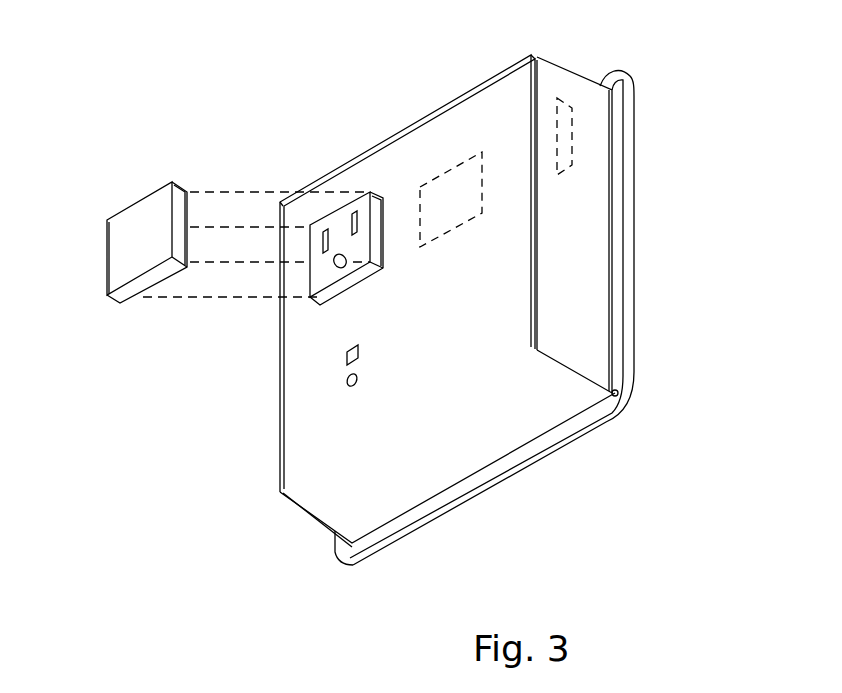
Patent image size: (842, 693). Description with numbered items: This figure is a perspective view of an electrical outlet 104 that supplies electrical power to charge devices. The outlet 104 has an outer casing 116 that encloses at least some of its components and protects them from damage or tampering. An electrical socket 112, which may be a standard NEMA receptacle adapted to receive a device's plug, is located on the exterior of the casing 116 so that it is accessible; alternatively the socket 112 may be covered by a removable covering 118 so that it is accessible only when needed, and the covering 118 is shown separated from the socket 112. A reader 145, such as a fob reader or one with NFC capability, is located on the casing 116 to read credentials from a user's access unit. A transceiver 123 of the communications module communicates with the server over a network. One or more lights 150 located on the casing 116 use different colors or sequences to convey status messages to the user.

The electrical outlet 104 is at (530, 494).
The outer casing 116 is at (290, 420).
The electrical socket 112 is at (336, 222).
The removable covering 118 is at (137, 232).
The reader 145 is at (462, 197).
The transceiver 123 is at (568, 137).
The light 150 is at (363, 345).